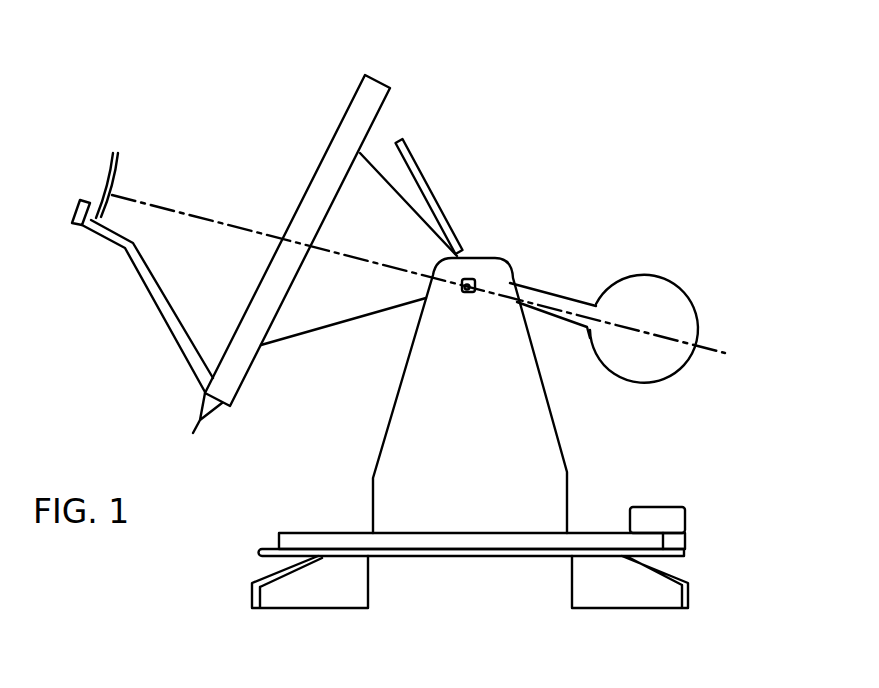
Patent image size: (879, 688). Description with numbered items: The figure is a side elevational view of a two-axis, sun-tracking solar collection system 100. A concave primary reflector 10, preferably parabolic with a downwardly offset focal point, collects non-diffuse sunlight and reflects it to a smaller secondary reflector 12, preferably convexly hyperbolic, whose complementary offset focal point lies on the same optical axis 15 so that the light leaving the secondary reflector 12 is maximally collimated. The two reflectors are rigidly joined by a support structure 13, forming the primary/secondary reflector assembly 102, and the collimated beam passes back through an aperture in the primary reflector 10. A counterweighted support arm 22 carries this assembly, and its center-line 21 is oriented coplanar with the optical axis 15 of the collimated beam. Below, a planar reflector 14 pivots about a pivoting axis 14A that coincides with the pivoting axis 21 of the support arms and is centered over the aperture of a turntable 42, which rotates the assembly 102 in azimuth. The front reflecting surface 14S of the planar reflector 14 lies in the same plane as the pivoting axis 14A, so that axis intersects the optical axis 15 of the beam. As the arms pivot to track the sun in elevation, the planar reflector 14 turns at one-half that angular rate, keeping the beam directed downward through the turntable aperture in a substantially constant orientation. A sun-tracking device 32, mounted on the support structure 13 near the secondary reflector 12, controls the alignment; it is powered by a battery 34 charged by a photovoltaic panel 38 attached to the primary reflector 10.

The solar collection system 100 is at (528, 68).
The primary reflector 10 is at (342, 113).
The secondary reflector 12 is at (115, 150).
The support structure 13 is at (135, 272).
The planar reflector 14 is at (410, 153).
The pivoting axis 14A is at (465, 293).
The front reflecting surface 14S is at (421, 190).
The optical axis 15 is at (418, 250).
The center-line 21 is at (152, 204).
The counterweighted support arm 22 is at (678, 288).
The sun-tracking device 32 is at (80, 212).
The battery 34 is at (667, 505).
The photovoltaic panel 38 is at (198, 420).
The turntable 42 is at (328, 530).
The primary/secondary reflector assembly 102 is at (185, 297).